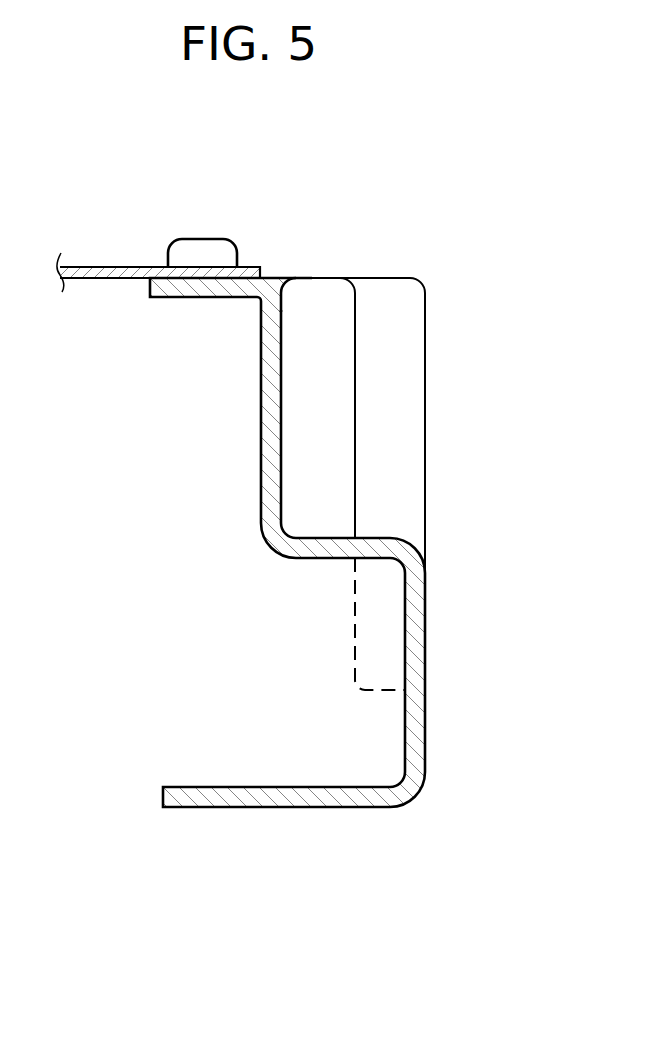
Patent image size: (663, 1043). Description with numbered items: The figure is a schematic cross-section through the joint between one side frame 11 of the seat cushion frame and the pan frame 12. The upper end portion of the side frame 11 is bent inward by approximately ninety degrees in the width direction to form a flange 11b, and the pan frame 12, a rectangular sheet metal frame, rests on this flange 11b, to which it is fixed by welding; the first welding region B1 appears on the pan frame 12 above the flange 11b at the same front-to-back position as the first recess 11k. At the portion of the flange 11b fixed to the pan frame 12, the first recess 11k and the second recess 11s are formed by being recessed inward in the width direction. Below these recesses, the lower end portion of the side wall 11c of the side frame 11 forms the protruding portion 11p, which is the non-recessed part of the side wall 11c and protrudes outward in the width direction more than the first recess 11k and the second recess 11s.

The side frame 11 is at (421, 798).
The flange 11b is at (192, 292).
The first recess 11k is at (284, 281).
The protruding portion 11p is at (413, 655).
The second recess 11s is at (362, 290).
The side wall 11c is at (425, 424).
The pan frame 12 is at (90, 273).
The first welding region B1 is at (210, 252).